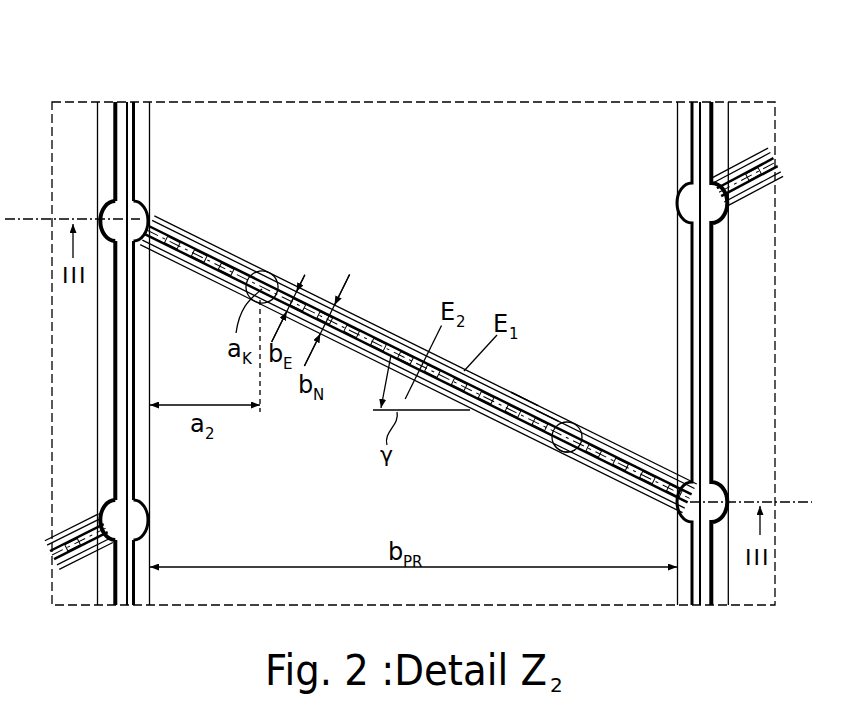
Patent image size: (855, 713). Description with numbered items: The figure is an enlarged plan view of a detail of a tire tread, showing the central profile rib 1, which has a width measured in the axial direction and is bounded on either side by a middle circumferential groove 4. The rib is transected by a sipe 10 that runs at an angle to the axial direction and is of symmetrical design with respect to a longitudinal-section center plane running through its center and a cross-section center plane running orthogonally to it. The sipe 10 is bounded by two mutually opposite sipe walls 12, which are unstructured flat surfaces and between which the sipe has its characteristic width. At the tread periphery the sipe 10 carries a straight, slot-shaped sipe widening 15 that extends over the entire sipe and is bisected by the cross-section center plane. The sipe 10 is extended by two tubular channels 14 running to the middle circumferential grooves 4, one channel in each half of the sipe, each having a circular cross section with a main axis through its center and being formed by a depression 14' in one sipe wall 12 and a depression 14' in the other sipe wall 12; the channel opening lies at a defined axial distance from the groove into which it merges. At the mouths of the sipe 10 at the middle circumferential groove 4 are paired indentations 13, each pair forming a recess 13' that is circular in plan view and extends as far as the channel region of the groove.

The central profile rib 1 is at (515, 120).
The middle circumferential groove 4 is at (129, 100).
The sipe 10 is at (389, 317).
The sipe wall 12 is at (546, 406).
The indentation 13 is at (170, 199).
The recess 13' is at (128, 281).
The channel 14 is at (596, 403).
The depression 14' is at (538, 485).
The sipe widening 15 is at (521, 387).